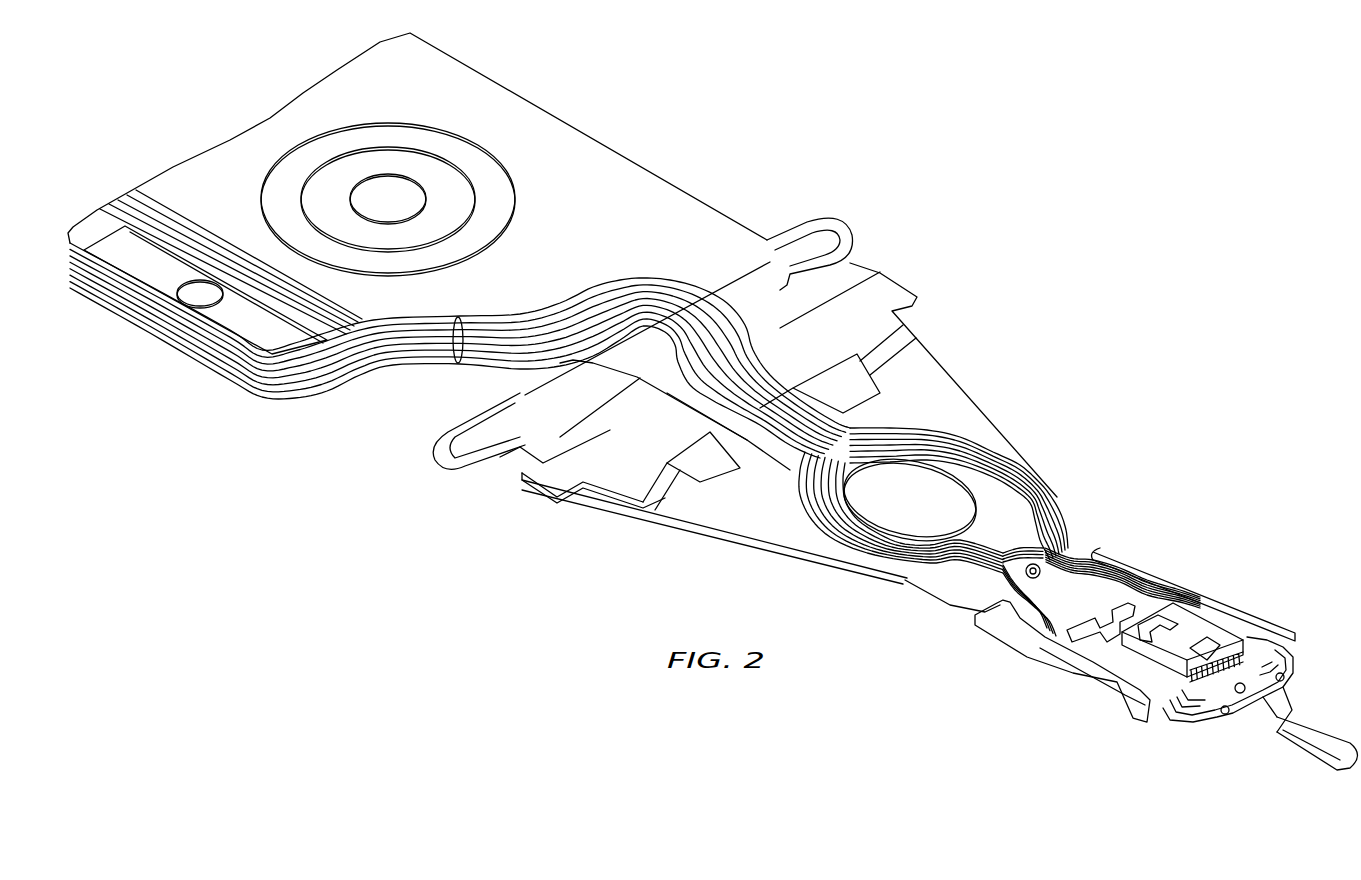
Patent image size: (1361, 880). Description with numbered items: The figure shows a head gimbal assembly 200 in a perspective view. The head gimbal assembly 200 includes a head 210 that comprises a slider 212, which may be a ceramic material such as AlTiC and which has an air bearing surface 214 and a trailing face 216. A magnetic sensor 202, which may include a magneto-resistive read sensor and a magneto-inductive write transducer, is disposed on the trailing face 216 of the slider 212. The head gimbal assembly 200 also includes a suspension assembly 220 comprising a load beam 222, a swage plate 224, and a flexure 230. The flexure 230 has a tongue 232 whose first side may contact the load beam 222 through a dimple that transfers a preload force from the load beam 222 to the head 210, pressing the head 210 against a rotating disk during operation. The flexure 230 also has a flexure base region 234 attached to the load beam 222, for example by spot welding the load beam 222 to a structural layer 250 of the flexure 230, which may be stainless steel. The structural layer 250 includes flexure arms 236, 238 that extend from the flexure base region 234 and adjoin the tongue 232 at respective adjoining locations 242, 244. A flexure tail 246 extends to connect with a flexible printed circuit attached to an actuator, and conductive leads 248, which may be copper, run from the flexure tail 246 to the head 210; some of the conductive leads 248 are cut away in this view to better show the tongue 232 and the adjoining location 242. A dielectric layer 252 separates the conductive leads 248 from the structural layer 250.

The head gimbal assembly 200 is at (912, 175).
The magnetic sensor 202 is at (1232, 640).
The head 210 is at (1212, 630).
The slider 212 is at (1115, 665).
The air bearing surface 214 is at (1170, 600).
The trailing face 216 is at (1283, 642).
The suspension assembly 220 is at (548, 440).
The load beam 222 is at (950, 395).
The swage plate 224 is at (572, 142).
The flexure 230 is at (1025, 483).
The tongue 232 is at (1128, 668).
The flexure base region 234 is at (905, 565).
The flexure arm 236 is at (1015, 648).
The flexure arm 238 is at (1140, 553).
The adjoining location 242 is at (1170, 717).
The adjoining location 244 is at (1290, 650).
The flexure tail 246 is at (135, 310).
The conductive leads 248 is at (462, 330).
The structural layer 250 is at (1090, 527).
The dielectric layer 252 is at (340, 345).